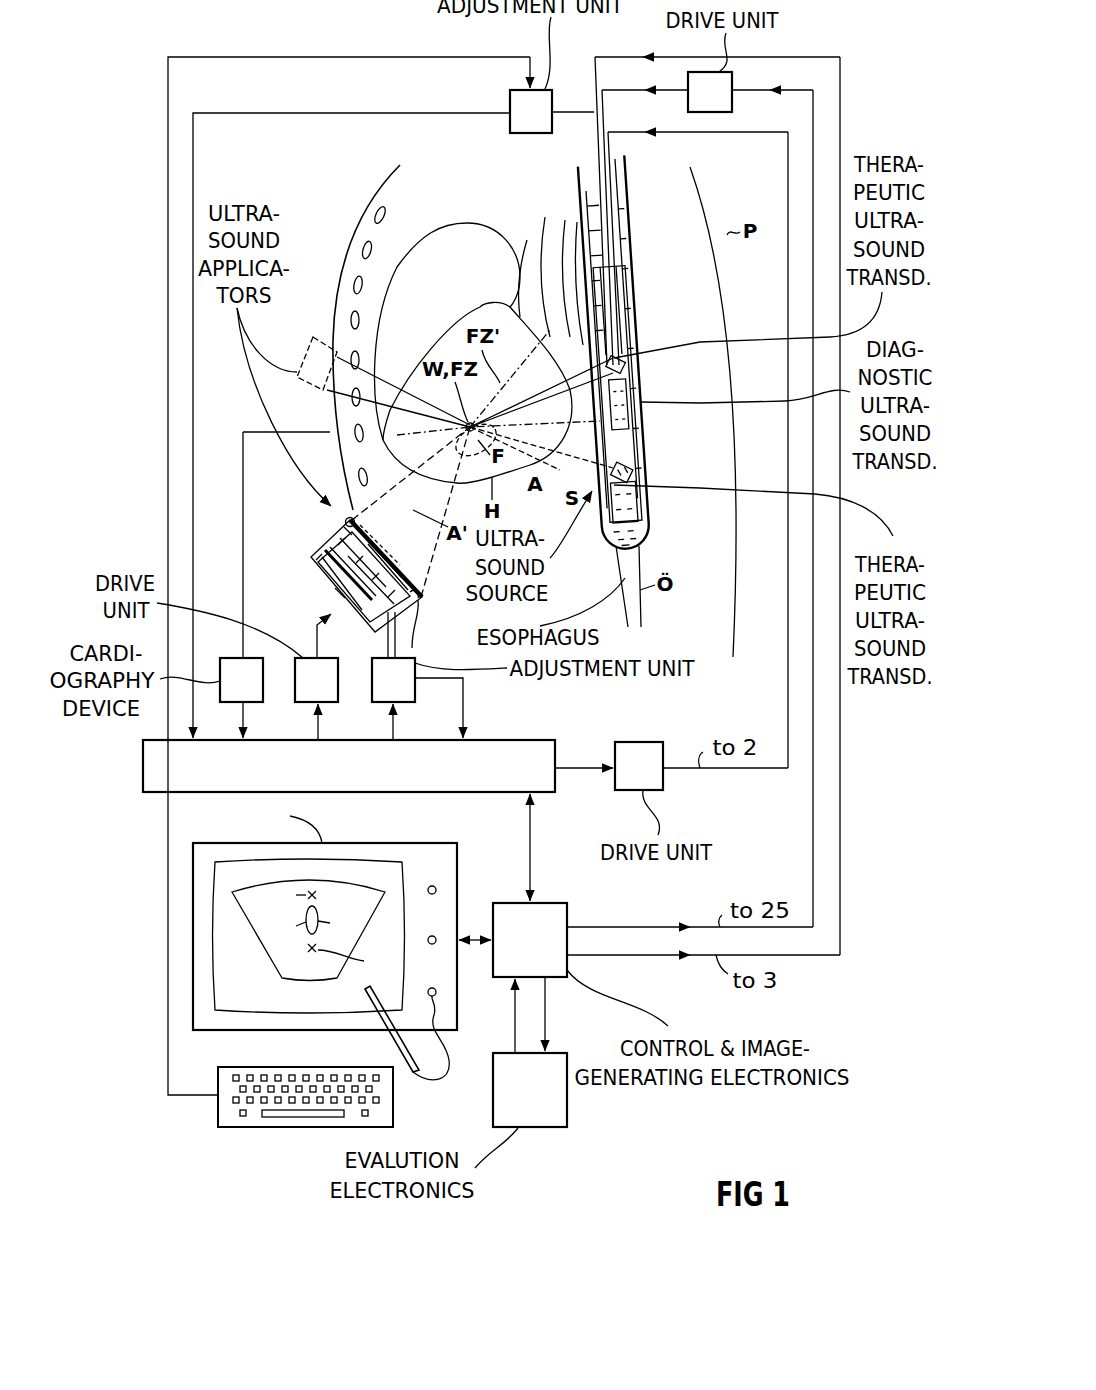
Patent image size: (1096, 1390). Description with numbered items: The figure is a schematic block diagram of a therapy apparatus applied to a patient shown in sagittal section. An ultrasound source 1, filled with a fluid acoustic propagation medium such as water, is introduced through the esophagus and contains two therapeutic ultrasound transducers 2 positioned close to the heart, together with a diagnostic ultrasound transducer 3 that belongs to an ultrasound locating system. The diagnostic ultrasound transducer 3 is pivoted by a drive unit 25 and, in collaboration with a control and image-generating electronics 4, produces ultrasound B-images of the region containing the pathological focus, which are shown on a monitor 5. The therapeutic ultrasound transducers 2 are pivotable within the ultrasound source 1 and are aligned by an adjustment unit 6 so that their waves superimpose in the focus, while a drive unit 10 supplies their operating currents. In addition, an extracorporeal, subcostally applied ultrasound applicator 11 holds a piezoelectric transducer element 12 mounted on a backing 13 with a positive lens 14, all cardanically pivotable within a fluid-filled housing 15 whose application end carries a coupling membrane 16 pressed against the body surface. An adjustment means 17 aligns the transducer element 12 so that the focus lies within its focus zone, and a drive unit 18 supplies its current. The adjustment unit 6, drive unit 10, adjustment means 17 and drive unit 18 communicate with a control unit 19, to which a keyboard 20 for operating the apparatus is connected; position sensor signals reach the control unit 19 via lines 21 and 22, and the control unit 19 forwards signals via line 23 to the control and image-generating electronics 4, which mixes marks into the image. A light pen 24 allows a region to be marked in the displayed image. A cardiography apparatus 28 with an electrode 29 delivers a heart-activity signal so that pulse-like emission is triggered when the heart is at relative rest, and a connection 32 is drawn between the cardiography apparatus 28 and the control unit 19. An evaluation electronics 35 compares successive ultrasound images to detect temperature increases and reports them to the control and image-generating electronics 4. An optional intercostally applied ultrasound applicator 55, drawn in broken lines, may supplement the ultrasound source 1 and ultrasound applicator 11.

The ultrasound source 1 is at (632, 327).
The therapeutic ultrasound transducers 2 is at (645, 362).
The diagnostic ultrasound transducer 3 is at (645, 420).
The control and image-generating electronics 4 is at (523, 951).
The monitor 5 is at (413, 843).
The adjustment unit 6 is at (524, 123).
The drive unit 10 is at (627, 777).
The ultrasound applicator 11 is at (335, 510).
The transducer element 12 is at (345, 530).
The backing 13 is at (338, 590).
The positive lens 14 is at (408, 580).
The housing 15 is at (318, 560).
The coupling membrane 16 is at (422, 598).
The adjustment means 17 is at (405, 691).
The drive unit 18 is at (328, 691).
The control unit 19 is at (517, 740).
The keyboard 20 is at (394, 1116).
The line 21 is at (194, 575).
The line 22 is at (464, 693).
The line 23 is at (532, 852).
The light pen 24 is at (393, 1042).
The drive unit 25 is at (698, 103).
The cardiography apparatus 28 is at (229, 691).
The electrode 29 is at (330, 444).
The signal line 32 is at (244, 718).
The evaluation electronics 35 is at (518, 1101).
The ultrasound applicator 55 is at (312, 351).